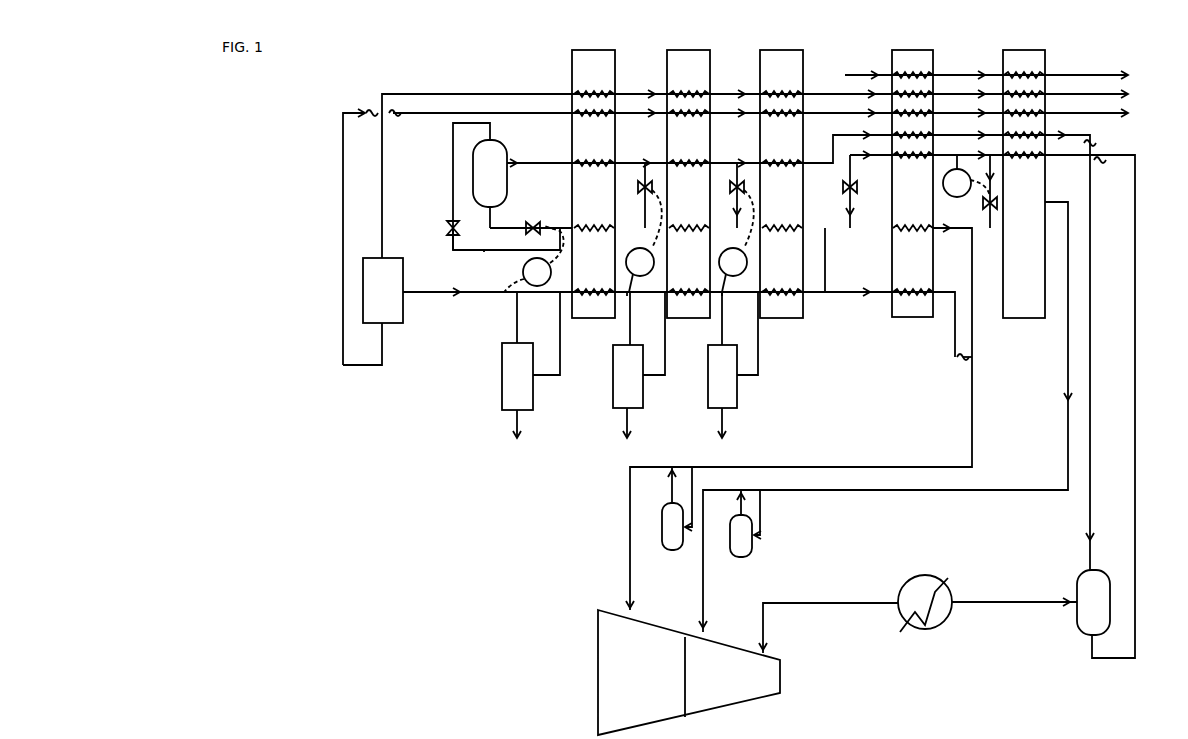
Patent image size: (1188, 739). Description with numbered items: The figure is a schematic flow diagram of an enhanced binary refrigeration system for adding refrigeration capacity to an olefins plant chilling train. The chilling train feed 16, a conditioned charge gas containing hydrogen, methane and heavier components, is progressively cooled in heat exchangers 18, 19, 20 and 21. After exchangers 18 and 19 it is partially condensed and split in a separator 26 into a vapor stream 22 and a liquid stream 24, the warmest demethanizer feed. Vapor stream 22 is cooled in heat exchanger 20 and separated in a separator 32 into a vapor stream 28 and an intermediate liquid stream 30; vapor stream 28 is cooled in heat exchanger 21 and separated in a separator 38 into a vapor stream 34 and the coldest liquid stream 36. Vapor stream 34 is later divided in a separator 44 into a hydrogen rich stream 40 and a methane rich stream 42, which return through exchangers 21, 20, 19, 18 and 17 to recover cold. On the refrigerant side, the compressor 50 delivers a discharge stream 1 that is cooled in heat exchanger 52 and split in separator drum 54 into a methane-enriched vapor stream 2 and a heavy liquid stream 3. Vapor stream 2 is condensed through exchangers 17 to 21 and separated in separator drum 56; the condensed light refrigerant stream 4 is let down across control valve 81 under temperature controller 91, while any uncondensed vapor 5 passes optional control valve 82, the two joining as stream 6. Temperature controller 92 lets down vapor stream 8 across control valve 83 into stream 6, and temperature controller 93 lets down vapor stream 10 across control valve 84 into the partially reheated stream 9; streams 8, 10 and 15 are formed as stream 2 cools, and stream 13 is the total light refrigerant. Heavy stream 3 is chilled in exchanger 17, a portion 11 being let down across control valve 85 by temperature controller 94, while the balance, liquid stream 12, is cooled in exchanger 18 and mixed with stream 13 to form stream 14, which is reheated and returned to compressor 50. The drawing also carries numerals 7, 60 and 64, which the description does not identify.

The extended binary compressor discharge stream 1 is at (849, 602).
The vapor stream 2 is at (1090, 431).
The liquid stream 3 is at (1135, 478).
The condensed light refrigerant stream 4 is at (517, 228).
The uncondensed vapor 5 is at (484, 252).
The combined light refrigerant stream 6 is at (628, 228).
The control signal line 7 is at (724, 162).
The vapor stream 8 is at (647, 182).
The partially reheated stream 9 is at (721, 228).
The vapor stream 10 is at (738, 182).
The heavy refrigerant letdown stream 11 is at (995, 168).
The liquid stream 12 is at (860, 186).
The light refrigerant stream 13 is at (845, 71).
The mixed refrigerant stream 14 is at (972, 408).
The light refrigerant stream 15 is at (547, 162).
The chilling train feed 16 is at (955, 340).
The heat exchanger 17 is at (1033, 236).
The heat exchanger 18 is at (922, 201).
The heat exchanger 19 is at (791, 201).
The heat exchanger 20 is at (698, 201).
The heat exchanger 21 is at (603, 201).
The vapor stream 22 is at (722, 324).
The liquid stream 24 is at (722, 432).
The separator 26 is at (627, 324).
The vapor stream 28 is at (731, 384).
The liquid stream 30 is at (627, 432).
The separator 32 is at (637, 384).
The vapor stream 34 is at (459, 294).
The liquid stream 36 is at (517, 432).
The separator 38 is at (526, 381).
The hydrogen rich stream 40 is at (382, 212).
The methane rich stream 42 is at (342, 232).
The separator 44 is at (393, 299).
The extended binary refrigeration compressor 50 is at (716, 682).
The heat exchanger 52 is at (926, 574).
The separator drum 54 is at (677, 508).
The separator drum 56 is at (499, 182).
The vessel 60 is at (745, 523).
The vessel 64 is at (1102, 612).
The control valve 81 is at (537, 222).
The control valve 82 is at (456, 252).
The control valve 83 is at (640, 184).
The control valve 84 is at (737, 184).
The control valve 85 is at (996, 216).
The temperature controller 91 is at (537, 286).
The temperature controller 92 is at (648, 276).
The temperature controller 93 is at (741, 276).
The temperature controller 94 is at (957, 197).